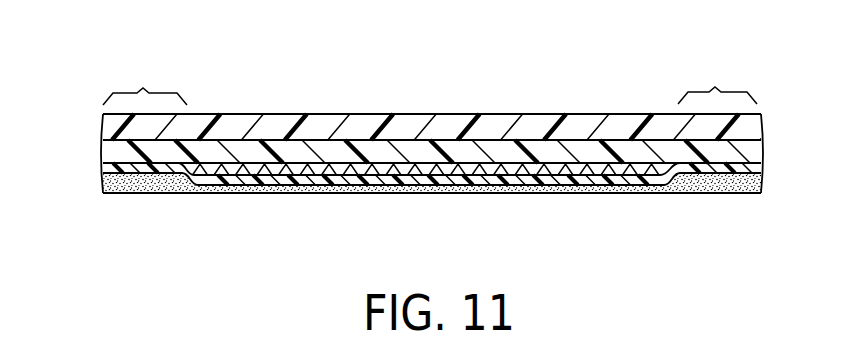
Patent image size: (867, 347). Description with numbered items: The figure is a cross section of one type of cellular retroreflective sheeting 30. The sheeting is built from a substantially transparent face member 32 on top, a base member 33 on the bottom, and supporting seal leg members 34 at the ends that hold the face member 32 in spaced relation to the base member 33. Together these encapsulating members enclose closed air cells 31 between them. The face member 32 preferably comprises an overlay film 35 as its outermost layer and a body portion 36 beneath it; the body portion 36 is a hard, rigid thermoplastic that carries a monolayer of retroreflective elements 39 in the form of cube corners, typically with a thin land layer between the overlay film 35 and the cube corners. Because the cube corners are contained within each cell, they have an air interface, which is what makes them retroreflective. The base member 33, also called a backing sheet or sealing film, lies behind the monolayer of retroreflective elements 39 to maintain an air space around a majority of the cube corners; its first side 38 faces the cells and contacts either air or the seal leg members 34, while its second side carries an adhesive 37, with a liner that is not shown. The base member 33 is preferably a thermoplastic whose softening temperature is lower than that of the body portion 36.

The cellular sheeting 30 is at (649, 66).
The closed air cells 31 is at (417, 167).
The face member 32 is at (767, 113).
The base member 33 is at (767, 161).
The seal leg members 34 is at (430, 81).
The overlay film 35 is at (107, 125).
The body portion 36 is at (123, 149).
The adhesive 37 is at (323, 182).
The first side 38 is at (110, 167).
The retroreflective elements 39 is at (547, 175).